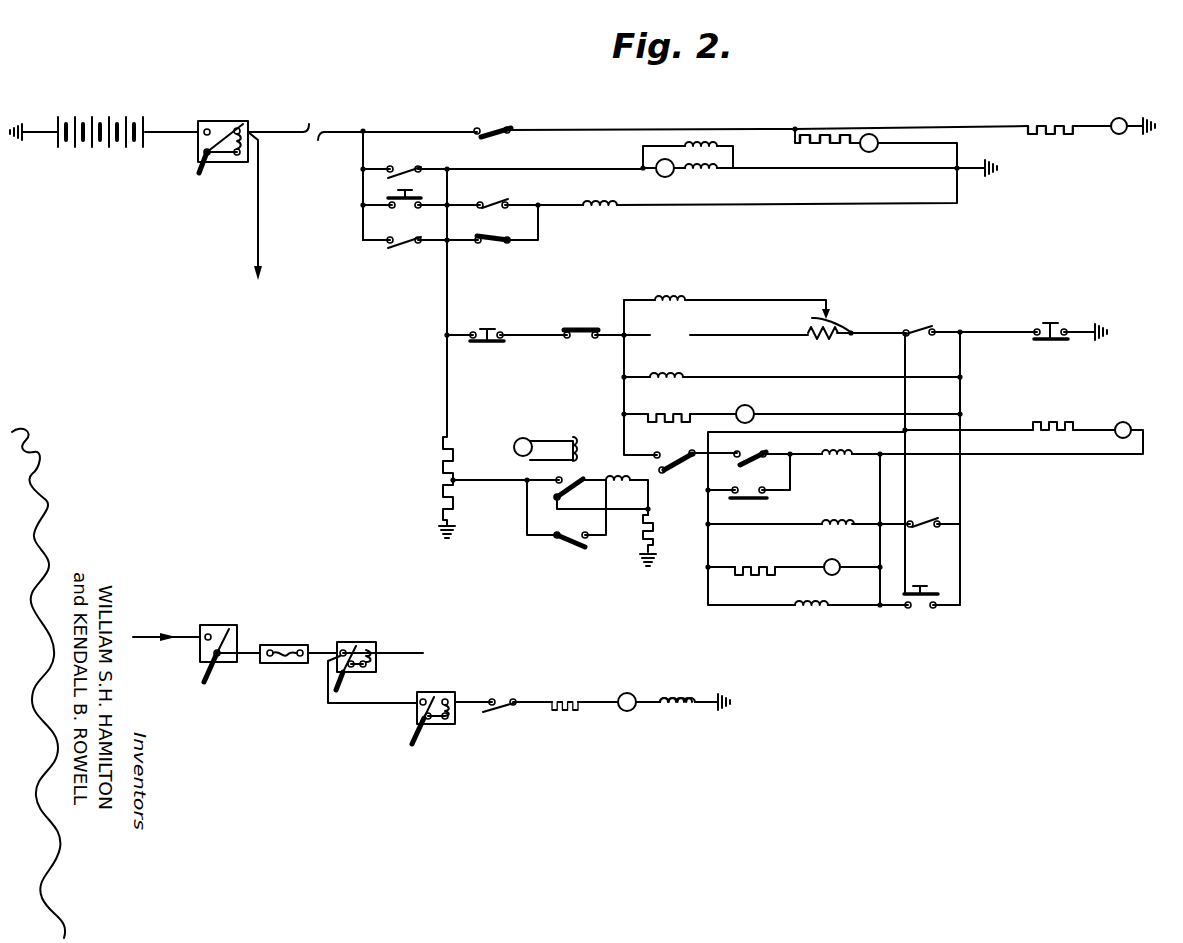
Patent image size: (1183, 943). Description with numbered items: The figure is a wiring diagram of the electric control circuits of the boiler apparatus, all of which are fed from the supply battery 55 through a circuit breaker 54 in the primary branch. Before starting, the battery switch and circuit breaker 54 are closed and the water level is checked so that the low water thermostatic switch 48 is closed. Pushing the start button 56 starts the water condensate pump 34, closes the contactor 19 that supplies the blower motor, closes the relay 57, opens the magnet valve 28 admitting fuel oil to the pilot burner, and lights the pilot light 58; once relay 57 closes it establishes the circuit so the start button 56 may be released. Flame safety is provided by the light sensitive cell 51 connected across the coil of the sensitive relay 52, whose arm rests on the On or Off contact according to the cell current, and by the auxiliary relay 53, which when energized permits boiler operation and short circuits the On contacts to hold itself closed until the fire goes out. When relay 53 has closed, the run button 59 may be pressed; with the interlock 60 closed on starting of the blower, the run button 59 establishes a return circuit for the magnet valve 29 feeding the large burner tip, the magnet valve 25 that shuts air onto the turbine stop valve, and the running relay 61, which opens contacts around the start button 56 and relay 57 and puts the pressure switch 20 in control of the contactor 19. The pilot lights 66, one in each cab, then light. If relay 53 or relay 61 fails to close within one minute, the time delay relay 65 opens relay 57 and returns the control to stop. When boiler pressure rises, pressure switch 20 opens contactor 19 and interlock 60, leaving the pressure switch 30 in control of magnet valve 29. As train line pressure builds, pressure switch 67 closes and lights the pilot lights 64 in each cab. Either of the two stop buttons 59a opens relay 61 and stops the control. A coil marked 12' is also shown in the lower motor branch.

The supply battery 55 is at (92, 123).
The circuit breaker 54 is at (320, 126).
The pressure switch 67 is at (493, 128).
The water condensate pump 34 is at (703, 160).
The pilot lights 64 is at (876, 135).
The running relay 61 is at (400, 172).
The start button 56 is at (419, 196).
The contactor 19 is at (504, 696).
The pressure switch 20 is at (493, 251).
The relay 57 is at (412, 256).
The low water thermostatic switch 48 is at (590, 320).
The stop buttons 59a is at (1050, 342).
The time delay relay 65 is at (839, 313).
The electric solenoid valve 28 is at (668, 376).
The pilot light 58 is at (752, 407).
The pilot lights 66 is at (1126, 422).
The photronic or light sensitive cell 51 is at (516, 440).
The sensitive relay 52 is at (578, 441).
The auxiliary relay 53 is at (632, 484).
The pressure switch 30 is at (744, 455).
The interlock 60 is at (747, 490).
The solenoid valve 29 is at (837, 465).
The run button 59 is at (927, 586).
The electric solenoid valve 25 is at (816, 612).
The motor coil 12' is at (676, 717).